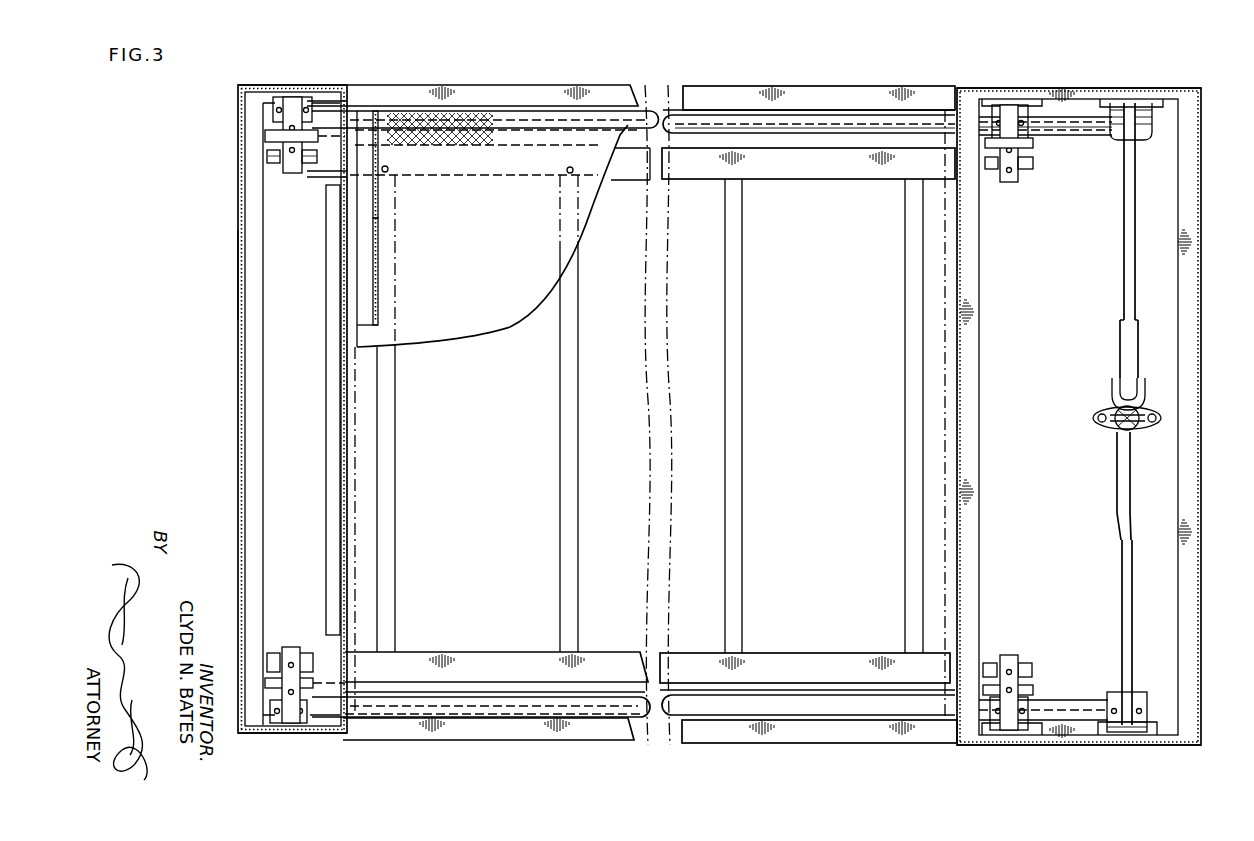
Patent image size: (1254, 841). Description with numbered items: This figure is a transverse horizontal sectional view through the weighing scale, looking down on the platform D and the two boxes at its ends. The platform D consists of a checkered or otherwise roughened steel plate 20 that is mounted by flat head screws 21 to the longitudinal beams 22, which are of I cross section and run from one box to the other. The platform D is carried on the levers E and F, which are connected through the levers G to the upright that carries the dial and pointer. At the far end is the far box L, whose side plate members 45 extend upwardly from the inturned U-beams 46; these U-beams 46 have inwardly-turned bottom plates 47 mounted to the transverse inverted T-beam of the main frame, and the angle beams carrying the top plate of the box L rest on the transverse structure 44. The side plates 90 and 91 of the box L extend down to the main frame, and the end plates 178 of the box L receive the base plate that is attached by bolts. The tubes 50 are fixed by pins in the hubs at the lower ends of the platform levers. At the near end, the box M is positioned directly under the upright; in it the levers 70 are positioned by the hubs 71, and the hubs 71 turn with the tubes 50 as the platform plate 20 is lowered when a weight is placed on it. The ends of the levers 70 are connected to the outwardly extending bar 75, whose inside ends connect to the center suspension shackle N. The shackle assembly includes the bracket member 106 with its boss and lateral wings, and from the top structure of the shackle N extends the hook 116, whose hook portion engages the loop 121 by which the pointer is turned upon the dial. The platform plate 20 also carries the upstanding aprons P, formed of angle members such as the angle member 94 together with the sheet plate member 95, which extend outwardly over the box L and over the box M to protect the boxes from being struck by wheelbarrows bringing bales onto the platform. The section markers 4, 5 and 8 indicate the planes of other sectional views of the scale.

The far box L is at (236, 398).
The near box M is at (1050, 82).
The transverse structure 44 is at (247, 87).
The side plate members 45 is at (1122, 98).
The inturned U-beams 46 is at (585, 92).
The inwardly-turned bottom plates 47 is at (282, 528).
The tubes 50 is at (670, 108).
The flat head screws 21 is at (388, 168).
The longitudinal beams 22 is at (797, 168).
The checkered steel plate 20 is at (443, 318).
The platform D is at (492, 258).
The upstanding aprons P is at (400, 229).
The angle member 94 is at (367, 241).
The sheet plate member 95 is at (377, 302).
The side plate 90 is at (240, 273).
The side plate 91 is at (345, 508).
The lever E is at (288, 180).
The lever F is at (1011, 180).
The end plates 178 is at (290, 85).
The levers G is at (1112, 417).
The levers 70 is at (1127, 245).
The hubs 71 is at (1146, 140).
The outwardly extending bar 75 is at (1128, 360).
The center suspension shackle N is at (1112, 421).
The bracket member 106 is at (1108, 427).
The hook 116 is at (1135, 424).
The loop 121 is at (1135, 413).
The section line 4- 4 is at (1156, 52).
The section line 5- 5 is at (372, 47).
The section line 8- 8 is at (218, 197).